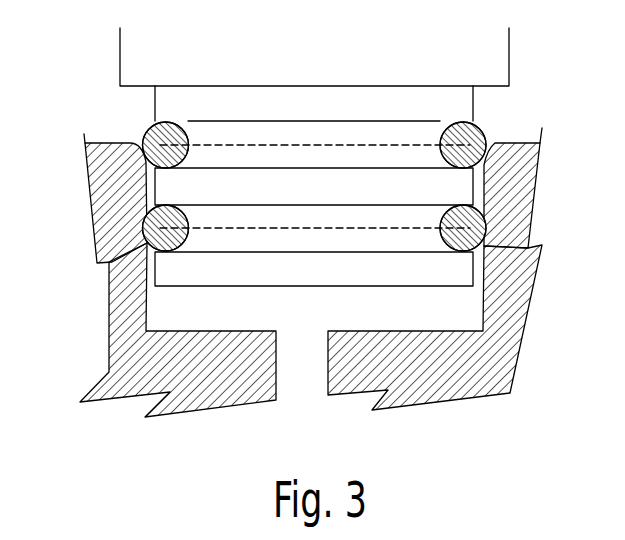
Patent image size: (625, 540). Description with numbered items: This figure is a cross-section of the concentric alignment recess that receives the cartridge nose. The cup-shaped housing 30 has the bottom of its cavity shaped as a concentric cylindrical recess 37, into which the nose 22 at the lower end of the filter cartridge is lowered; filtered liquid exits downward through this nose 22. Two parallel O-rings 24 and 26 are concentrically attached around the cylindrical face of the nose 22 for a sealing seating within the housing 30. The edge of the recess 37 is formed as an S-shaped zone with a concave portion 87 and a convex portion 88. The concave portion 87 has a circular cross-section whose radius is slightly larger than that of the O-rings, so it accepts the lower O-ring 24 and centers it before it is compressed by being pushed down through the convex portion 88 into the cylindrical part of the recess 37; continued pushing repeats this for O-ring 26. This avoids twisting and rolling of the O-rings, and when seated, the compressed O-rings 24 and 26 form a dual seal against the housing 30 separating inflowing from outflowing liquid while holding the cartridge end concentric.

The nose 22 is at (190, 103).
The lower O-ring 24 is at (147, 218).
The O-ring 26 is at (151, 124).
The housing 30 is at (213, 395).
The concentric cylindrical recess 37 is at (167, 316).
The concave portion 87 is at (142, 176).
The convex portion 88 is at (500, 166).